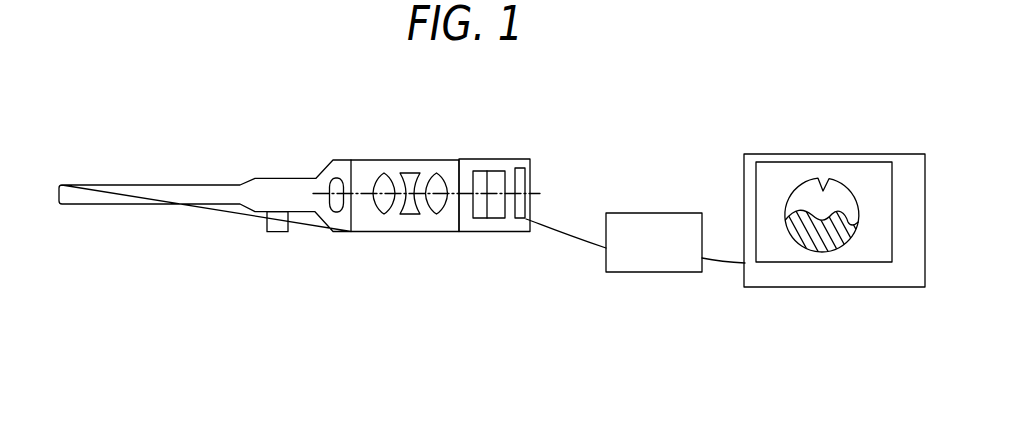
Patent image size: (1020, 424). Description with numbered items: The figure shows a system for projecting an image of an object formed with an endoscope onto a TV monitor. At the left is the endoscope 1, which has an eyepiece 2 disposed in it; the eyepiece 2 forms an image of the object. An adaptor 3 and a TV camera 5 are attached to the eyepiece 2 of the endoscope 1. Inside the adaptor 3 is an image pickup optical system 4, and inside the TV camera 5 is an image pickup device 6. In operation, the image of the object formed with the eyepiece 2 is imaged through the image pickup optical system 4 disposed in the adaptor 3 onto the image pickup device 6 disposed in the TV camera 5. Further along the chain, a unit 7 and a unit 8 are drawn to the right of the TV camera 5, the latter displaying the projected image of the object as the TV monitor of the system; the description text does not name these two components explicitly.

The endoscope 1 is at (279, 186).
The eyepiece 2 is at (337, 207).
The adaptor 3 is at (403, 160).
The image pickup optical system 4 is at (448, 233).
The TV camera 5 is at (492, 159).
The image pickup device 6 is at (513, 220).
The camera control unit 7 is at (637, 272).
The monitor 8 is at (790, 288).